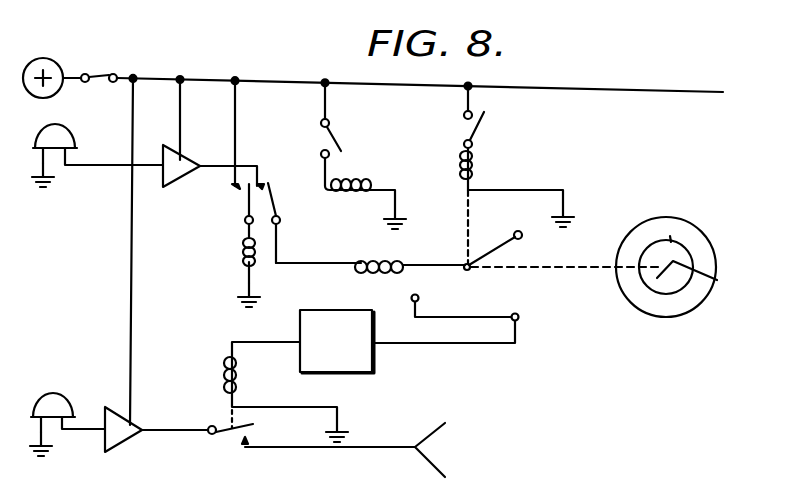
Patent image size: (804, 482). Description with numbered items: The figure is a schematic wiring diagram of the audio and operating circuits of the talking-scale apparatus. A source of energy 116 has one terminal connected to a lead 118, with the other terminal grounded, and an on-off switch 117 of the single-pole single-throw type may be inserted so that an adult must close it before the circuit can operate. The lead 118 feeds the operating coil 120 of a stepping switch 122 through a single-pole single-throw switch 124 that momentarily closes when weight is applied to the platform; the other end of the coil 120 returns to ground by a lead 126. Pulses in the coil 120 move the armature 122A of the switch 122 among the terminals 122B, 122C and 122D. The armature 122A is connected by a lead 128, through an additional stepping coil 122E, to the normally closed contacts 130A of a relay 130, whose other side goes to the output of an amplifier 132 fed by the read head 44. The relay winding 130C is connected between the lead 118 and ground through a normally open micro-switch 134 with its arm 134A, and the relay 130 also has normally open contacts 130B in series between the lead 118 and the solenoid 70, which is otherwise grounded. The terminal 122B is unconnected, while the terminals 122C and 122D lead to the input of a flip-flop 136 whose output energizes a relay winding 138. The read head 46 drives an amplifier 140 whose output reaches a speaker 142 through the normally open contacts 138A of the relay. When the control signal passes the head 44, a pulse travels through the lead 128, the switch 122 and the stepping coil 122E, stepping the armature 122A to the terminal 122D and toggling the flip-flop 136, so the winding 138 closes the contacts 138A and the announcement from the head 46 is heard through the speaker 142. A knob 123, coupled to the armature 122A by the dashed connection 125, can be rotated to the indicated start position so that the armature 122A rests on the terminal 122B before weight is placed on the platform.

The source of energy 116 is at (52, 62).
The on-off switch 117 is at (108, 73).
The lead 118 is at (257, 80).
The read head 44 is at (68, 128).
The amplifier 132 is at (196, 166).
The micro-switch 134 is at (353, 126).
The micro-switch arm 134A is at (342, 140).
The relay 130 is at (304, 196).
The normally closed contacts 130A is at (280, 200).
The normally open contacts 130B is at (246, 197).
The relay winding 130C is at (358, 185).
The solenoid 70 is at (243, 254).
The lead 128 is at (310, 262).
The stepping coil 122E is at (377, 262).
The single-pole single-throw switch 124 is at (479, 130).
The operating coil 120 is at (480, 160).
The lead 126 is at (497, 190).
The armature 122A is at (491, 250).
The terminal 122B is at (523, 236).
The stepping switch 122 is at (499, 256).
The connection 125 is at (553, 268).
The knob 123 is at (687, 267).
The terminal 122D is at (419, 297).
The terminal 122C is at (519, 317).
The flip-flop 136 is at (363, 318).
The relay winding 138 is at (225, 378).
The read head 46 is at (63, 397).
The amplifier 140 is at (131, 426).
The normally open contacts 138A is at (225, 436).
The speaker 142 is at (447, 433).